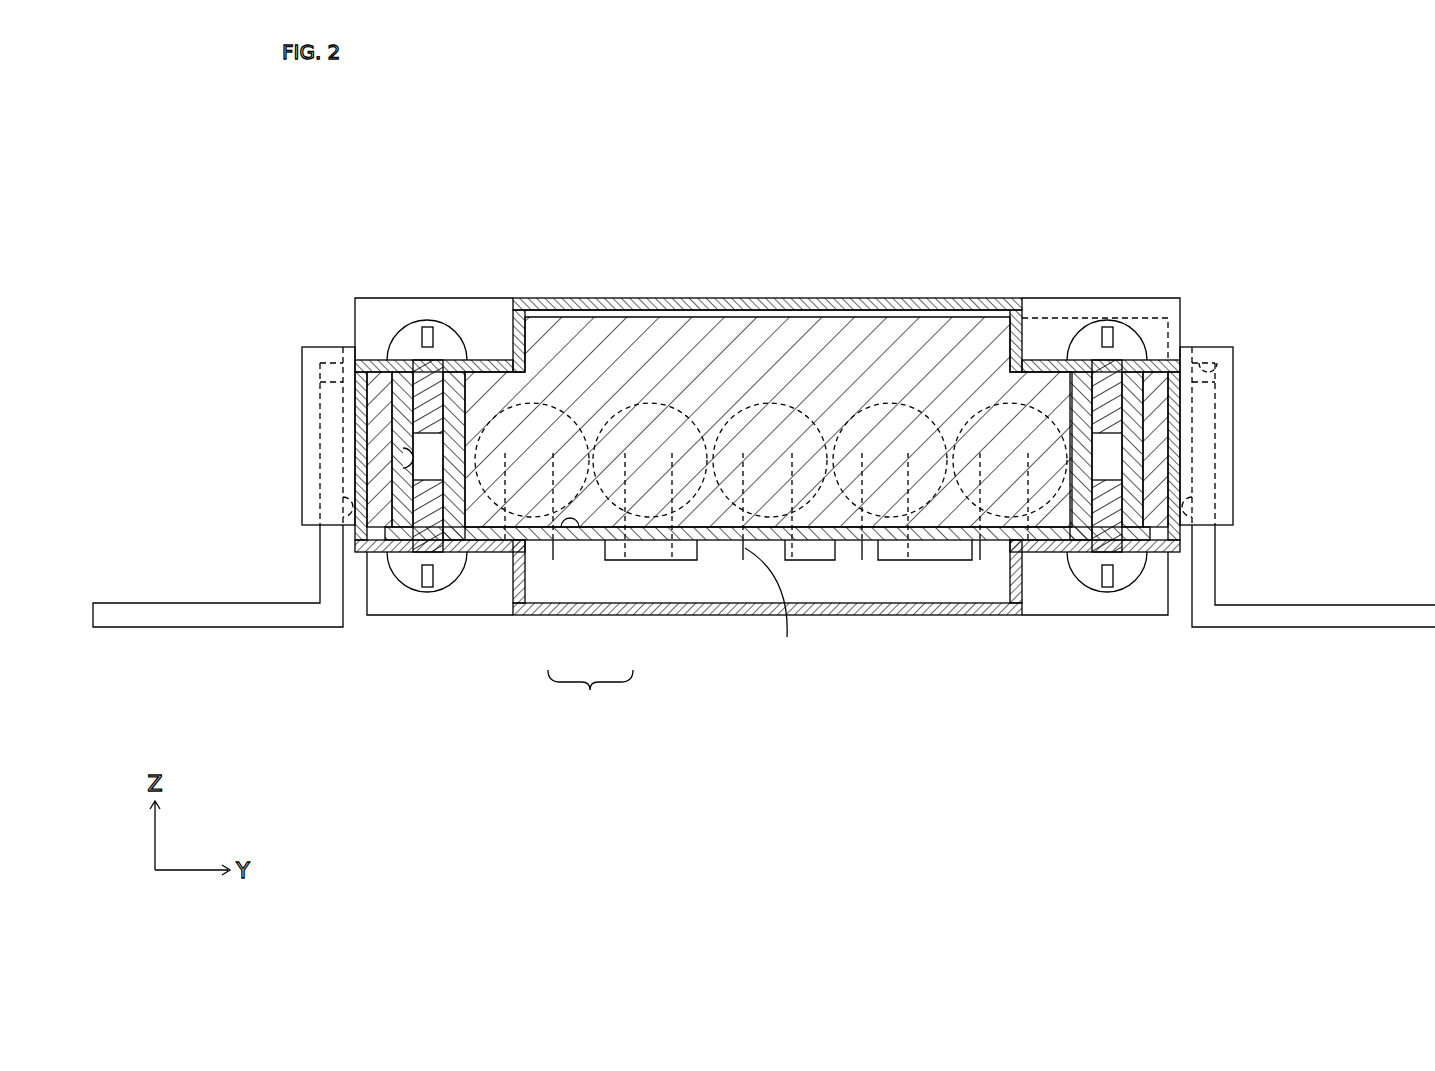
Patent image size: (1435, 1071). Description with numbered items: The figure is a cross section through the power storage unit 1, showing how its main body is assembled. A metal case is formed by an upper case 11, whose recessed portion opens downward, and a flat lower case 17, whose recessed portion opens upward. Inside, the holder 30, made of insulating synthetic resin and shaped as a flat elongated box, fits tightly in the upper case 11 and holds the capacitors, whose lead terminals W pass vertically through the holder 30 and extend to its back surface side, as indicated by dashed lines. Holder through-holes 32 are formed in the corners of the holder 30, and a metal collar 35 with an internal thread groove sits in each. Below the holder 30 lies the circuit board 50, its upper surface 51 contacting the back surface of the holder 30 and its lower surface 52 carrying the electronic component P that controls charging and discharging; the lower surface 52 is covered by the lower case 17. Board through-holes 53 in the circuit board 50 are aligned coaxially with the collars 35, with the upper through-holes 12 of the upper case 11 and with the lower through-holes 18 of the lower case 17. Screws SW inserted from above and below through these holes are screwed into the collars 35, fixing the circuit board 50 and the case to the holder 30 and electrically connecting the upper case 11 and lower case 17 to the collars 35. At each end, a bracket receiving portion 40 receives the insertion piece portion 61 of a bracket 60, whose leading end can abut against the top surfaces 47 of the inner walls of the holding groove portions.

The power storage unit 1 is at (838, 164).
The upper case 11 is at (862, 298).
The upper through-holes 12 is at (437, 360).
The lower case 17 is at (990, 617).
The lower through-holes 18 is at (433, 552).
The holder 30 is at (722, 316).
The holder through-holes 32 is at (400, 413).
The metal collar 35 is at (1133, 390).
The bracket receiving portion 40 is at (1232, 387).
The top surfaces 47 is at (1217, 372).
The circuit board 50 is at (590, 693).
The upper surface 51 is at (578, 527).
The lower surface 52 is at (595, 540).
The board through-holes 53 is at (423, 552).
The bracket 60 is at (715, 540).
The insertion piece portion 61 is at (1217, 462).
The screws SW is at (400, 575).
The lead terminals W is at (771, 605).
The electronic component P is at (942, 562).